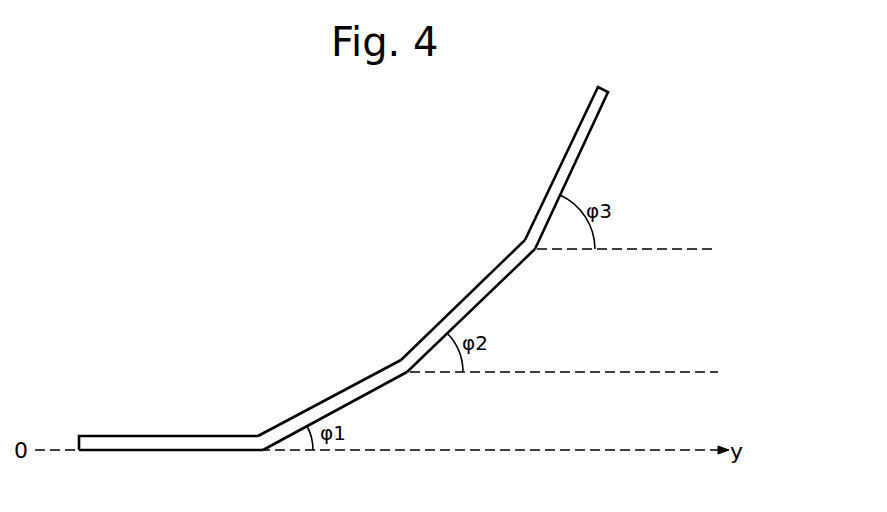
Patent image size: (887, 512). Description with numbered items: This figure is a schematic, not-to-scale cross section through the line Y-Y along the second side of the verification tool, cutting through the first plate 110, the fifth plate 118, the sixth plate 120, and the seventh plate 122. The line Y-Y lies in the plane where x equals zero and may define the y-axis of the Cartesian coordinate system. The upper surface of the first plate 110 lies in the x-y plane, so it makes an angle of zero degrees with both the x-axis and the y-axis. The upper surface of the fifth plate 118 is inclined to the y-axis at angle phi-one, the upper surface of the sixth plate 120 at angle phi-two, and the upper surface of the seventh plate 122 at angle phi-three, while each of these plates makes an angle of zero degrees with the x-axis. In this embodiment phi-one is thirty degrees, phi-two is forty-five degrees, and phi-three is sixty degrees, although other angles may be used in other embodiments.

The first plate 110 is at (152, 436).
The fifth plate 118 is at (322, 400).
The sixth plate 120 is at (470, 290).
The seventh plate 122 is at (562, 158).